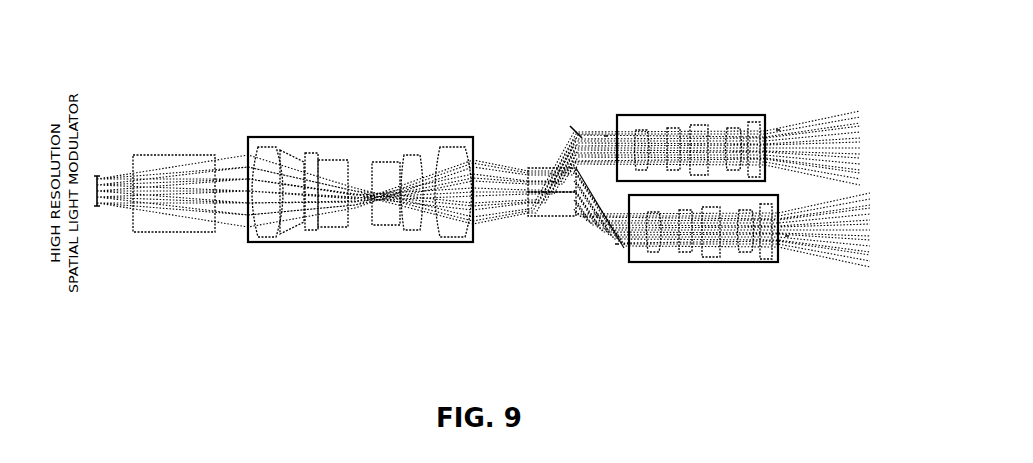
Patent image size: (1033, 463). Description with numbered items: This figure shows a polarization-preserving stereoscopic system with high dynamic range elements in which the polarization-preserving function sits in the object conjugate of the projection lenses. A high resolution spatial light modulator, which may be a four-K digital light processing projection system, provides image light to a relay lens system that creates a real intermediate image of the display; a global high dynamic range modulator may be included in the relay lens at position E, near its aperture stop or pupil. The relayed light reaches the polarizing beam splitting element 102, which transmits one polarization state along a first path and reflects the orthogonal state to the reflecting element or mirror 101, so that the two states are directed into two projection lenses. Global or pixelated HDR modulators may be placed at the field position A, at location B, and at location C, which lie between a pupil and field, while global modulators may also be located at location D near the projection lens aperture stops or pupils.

The reflecting element or mirror 101 is at (546, 176).
The beam splitting element 102 is at (546, 208).
The field position location A is at (606, 134).
The intermediate modulator location B is at (570, 124).
The intermediate modulator location C is at (778, 128).
The projection lens pupil location D is at (658, 138).
The relay lens pupil location E is at (359, 222).